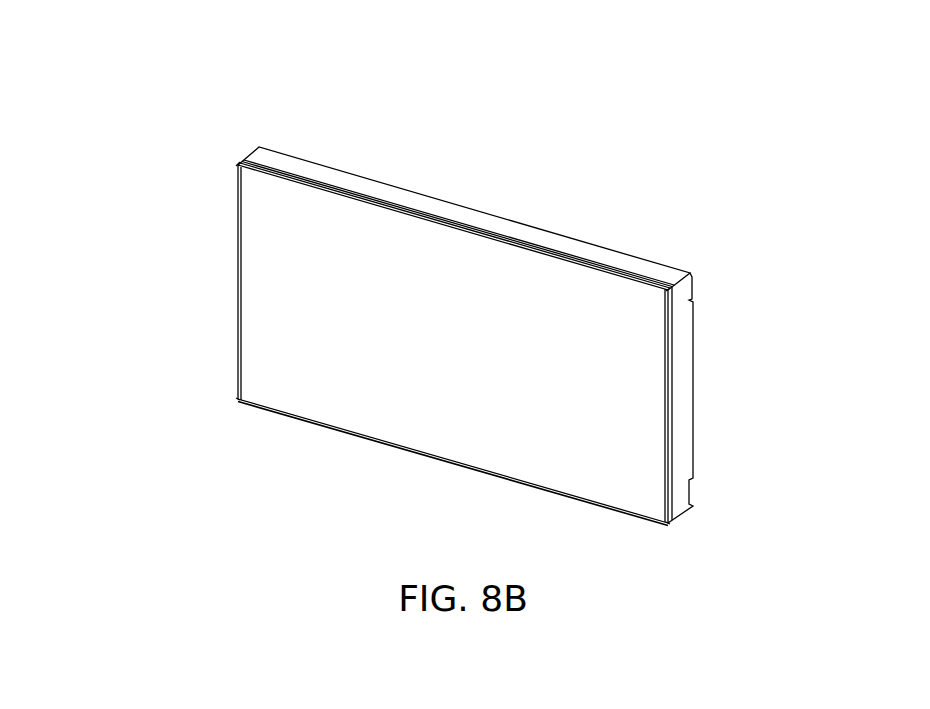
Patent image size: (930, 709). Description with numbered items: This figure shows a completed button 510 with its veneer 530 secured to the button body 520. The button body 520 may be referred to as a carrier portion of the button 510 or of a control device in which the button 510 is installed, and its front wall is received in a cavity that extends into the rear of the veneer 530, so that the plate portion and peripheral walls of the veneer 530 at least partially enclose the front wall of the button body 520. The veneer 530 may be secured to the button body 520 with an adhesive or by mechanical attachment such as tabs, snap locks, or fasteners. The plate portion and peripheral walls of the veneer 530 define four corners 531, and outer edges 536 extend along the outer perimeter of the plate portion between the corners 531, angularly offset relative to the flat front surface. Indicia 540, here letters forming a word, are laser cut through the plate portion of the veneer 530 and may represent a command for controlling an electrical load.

The button 510 is at (90, 120).
The button body 520 is at (432, 205).
The veneer 530 is at (253, 207).
The corners 531 is at (238, 164).
The outer edges 536 is at (536, 253).
The indicia 540 is at (396, 313).